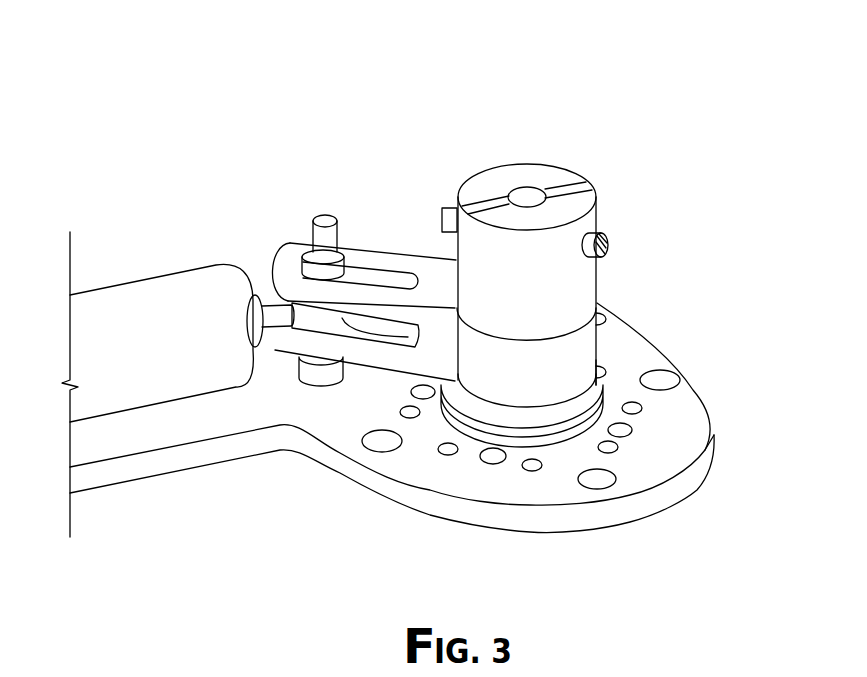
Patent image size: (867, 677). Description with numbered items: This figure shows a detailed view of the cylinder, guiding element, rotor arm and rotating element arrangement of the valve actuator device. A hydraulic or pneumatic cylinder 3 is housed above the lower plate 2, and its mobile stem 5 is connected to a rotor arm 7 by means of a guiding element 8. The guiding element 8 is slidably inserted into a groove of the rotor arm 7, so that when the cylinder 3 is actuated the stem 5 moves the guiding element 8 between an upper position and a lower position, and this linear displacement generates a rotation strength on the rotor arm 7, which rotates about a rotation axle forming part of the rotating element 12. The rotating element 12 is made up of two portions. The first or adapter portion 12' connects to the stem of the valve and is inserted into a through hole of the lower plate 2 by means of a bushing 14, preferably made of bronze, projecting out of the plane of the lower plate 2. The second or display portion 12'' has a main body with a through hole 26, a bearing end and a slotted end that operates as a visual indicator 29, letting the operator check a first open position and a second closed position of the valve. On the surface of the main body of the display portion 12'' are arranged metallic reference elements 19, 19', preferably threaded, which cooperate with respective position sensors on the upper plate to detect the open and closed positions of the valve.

The lower plate 2 is at (680, 483).
The hydraulic or pneumatic cylinder 3 is at (122, 393).
The stem 5 is at (283, 338).
The rotor arm 7 is at (582, 352).
The guiding element 8 is at (308, 240).
The rotating element 12 is at (584, 317).
The adapter portion 12' is at (689, 373).
The display portion 12'' is at (573, 246).
The bushing 14 is at (472, 445).
The metallic reference element 19 is at (421, 150).
The metallic reference element 19' is at (651, 221).
The through hole 26 is at (528, 196).
The visual indicator 29 is at (596, 192).